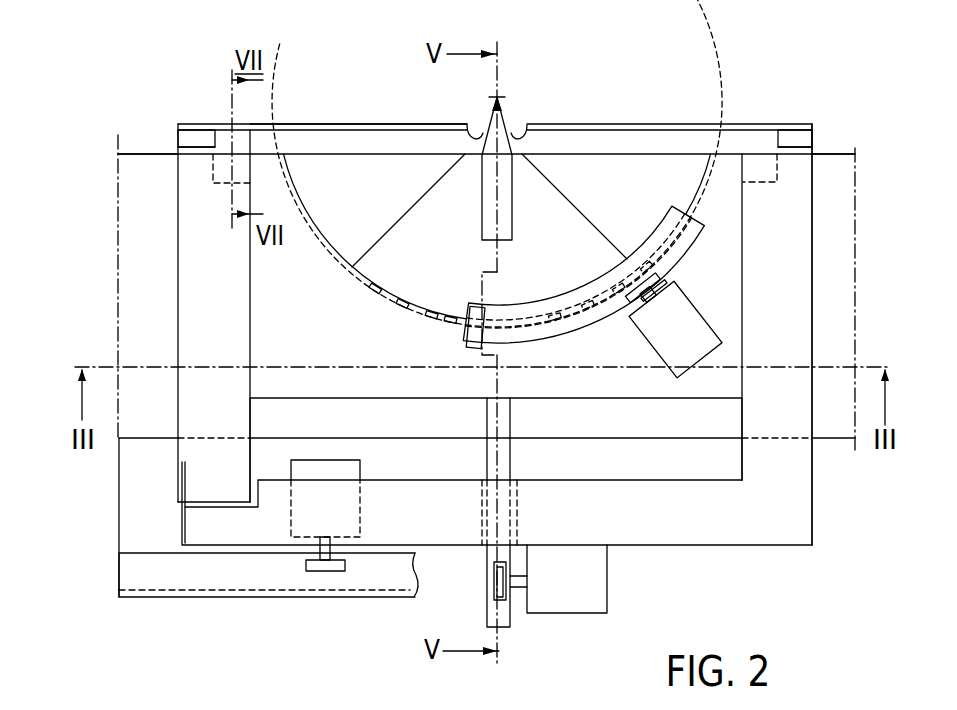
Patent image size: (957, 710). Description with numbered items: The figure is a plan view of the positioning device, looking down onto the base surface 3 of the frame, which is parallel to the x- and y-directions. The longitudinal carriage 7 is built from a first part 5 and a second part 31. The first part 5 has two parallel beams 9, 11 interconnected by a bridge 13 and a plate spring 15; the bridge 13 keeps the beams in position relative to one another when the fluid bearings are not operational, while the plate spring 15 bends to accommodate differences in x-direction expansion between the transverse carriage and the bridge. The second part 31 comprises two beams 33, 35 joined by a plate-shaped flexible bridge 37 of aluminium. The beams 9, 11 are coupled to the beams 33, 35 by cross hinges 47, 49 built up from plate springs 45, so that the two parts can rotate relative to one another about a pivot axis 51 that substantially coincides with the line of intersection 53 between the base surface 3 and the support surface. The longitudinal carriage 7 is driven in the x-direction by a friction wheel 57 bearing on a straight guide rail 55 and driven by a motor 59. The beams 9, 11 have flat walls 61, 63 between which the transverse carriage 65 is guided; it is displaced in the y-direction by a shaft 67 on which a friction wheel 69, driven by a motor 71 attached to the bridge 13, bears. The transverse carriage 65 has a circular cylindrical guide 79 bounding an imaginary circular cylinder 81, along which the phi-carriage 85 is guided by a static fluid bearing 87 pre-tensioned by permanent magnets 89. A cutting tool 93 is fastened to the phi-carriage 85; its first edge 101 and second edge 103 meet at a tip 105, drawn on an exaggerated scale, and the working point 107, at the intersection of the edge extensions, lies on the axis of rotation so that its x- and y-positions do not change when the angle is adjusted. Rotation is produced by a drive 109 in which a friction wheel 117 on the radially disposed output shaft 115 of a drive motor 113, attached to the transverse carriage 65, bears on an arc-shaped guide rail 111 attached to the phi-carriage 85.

The base surface 3 is at (383, 172).
The first part of the longitudinal carriage 5 is at (196, 476).
The longitudinal carriage 7 is at (785, 500).
The beam 9 is at (186, 323).
The beam 11 is at (798, 305).
The bridge 13 is at (589, 495).
The plate spring 15 is at (180, 511).
The second part of the longitudinal carriage 31 is at (181, 142).
The beam 33 is at (190, 134).
The beam 35 is at (807, 130).
The plate-shaped flexible bridge 37 is at (308, 125).
The plate springs 45 is at (183, 147).
The cross hinge 47 is at (208, 140).
The cross hinge 49 is at (793, 130).
The pivot axis 51 is at (140, 155).
The line of intersection 53 is at (813, 150).
The straight guide rail 55 is at (257, 576).
The friction wheel 57 is at (335, 573).
The motor 59 is at (355, 528).
The flat wall 61 is at (253, 413).
The flat wall 63 is at (742, 408).
The transverse carriage 65 is at (728, 242).
The shaft 67 is at (510, 622).
The friction wheel 69 is at (494, 583).
The motor 71 is at (588, 615).
The circular cylindrical guide 79 is at (322, 234).
The imaginary circular cylinder 81 is at (284, 62).
The phi-carriage 85 is at (597, 242).
The static fluid bearing 87 is at (392, 280).
The permanent magnets 89 is at (457, 332).
The cutting tool 93 is at (512, 213).
The first edge 101 is at (466, 125).
The second edge 103 is at (528, 124).
The tip 105 is at (501, 108).
The working point 107 is at (503, 96).
The drive 109 is at (655, 284).
The guide rail 111 is at (505, 344).
The drive motor 113 is at (718, 346).
The output shaft 115 is at (652, 300).
The friction wheel 117 is at (655, 279).